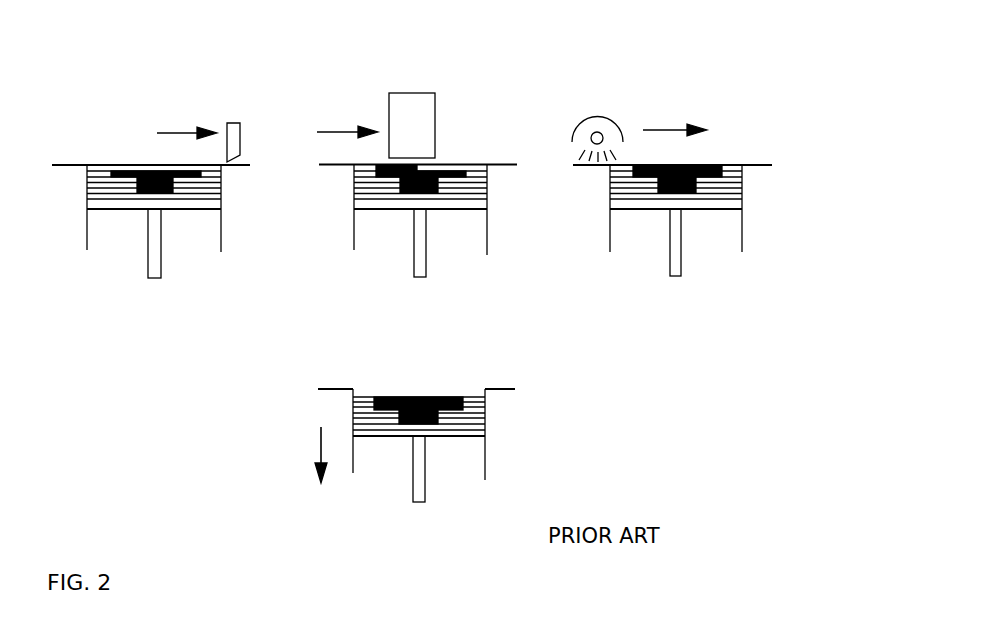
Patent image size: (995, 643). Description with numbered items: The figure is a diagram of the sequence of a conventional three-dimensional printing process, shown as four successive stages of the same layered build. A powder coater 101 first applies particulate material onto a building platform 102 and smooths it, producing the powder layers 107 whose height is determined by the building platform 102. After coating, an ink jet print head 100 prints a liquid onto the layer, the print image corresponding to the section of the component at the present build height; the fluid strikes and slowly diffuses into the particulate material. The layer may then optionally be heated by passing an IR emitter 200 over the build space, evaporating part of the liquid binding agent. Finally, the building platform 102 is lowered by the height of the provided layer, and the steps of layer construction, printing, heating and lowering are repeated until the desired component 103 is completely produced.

The ink jet print head 100 is at (405, 112).
The powder coater 101 is at (222, 123).
The building platform 102 is at (206, 214).
The component 103 is at (656, 203).
The powder layers 107 is at (100, 210).
The IR emitter 200 is at (582, 125).